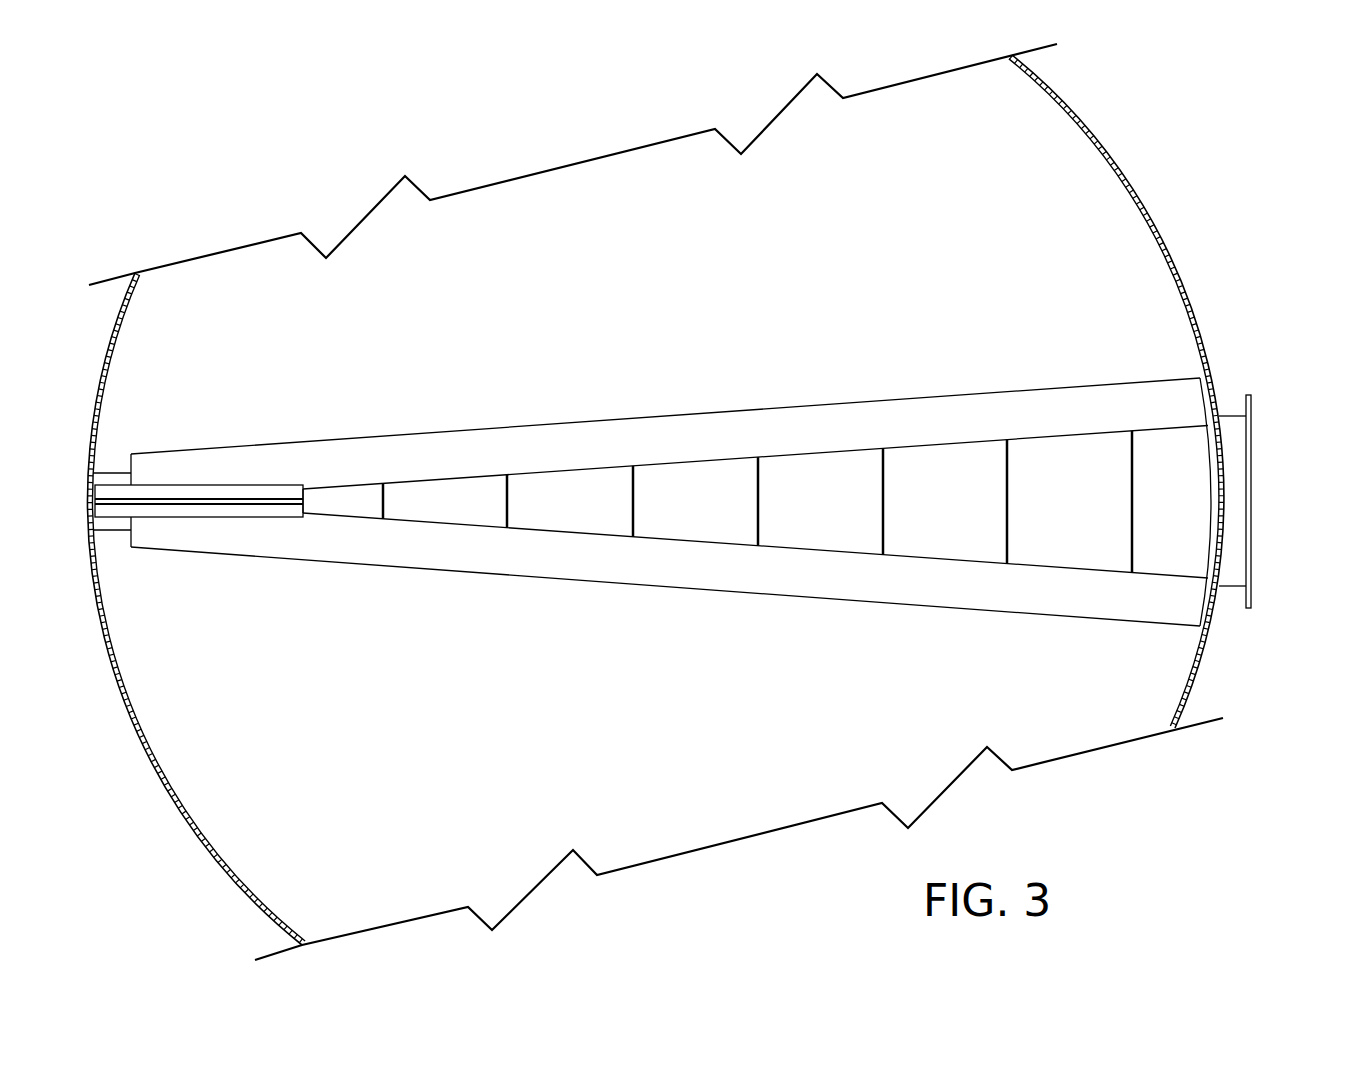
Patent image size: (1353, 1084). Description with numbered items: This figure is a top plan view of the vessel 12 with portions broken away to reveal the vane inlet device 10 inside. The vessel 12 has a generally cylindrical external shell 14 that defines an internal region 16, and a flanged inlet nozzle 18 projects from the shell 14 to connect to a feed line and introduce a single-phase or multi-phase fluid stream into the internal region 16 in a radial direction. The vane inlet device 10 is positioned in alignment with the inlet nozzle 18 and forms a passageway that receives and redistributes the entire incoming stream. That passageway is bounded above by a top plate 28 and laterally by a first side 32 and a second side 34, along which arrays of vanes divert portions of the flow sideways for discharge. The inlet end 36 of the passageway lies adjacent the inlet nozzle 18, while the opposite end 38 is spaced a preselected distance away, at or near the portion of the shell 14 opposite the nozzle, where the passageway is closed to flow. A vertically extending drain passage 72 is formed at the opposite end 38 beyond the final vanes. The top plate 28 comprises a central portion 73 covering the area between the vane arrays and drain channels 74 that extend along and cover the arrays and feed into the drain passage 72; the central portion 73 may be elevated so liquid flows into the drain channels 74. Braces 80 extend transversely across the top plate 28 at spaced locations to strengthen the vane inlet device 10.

The vane inlet device 10 is at (708, 490).
The vessel 12 is at (1157, 212).
The external shell 14 is at (1172, 260).
The internal region 16 is at (1078, 193).
The flanged inlet nozzle 18 is at (1252, 413).
The top plate 28 is at (831, 515).
The first side 32 is at (960, 608).
The second side 34 is at (860, 400).
The inlet end 36 is at (1210, 402).
The opposite end 38 is at (132, 470).
The drain passage 72 is at (110, 530).
The central portion 73 is at (692, 522).
The drain channels 74 is at (777, 425).
The braces 80 is at (1008, 520).